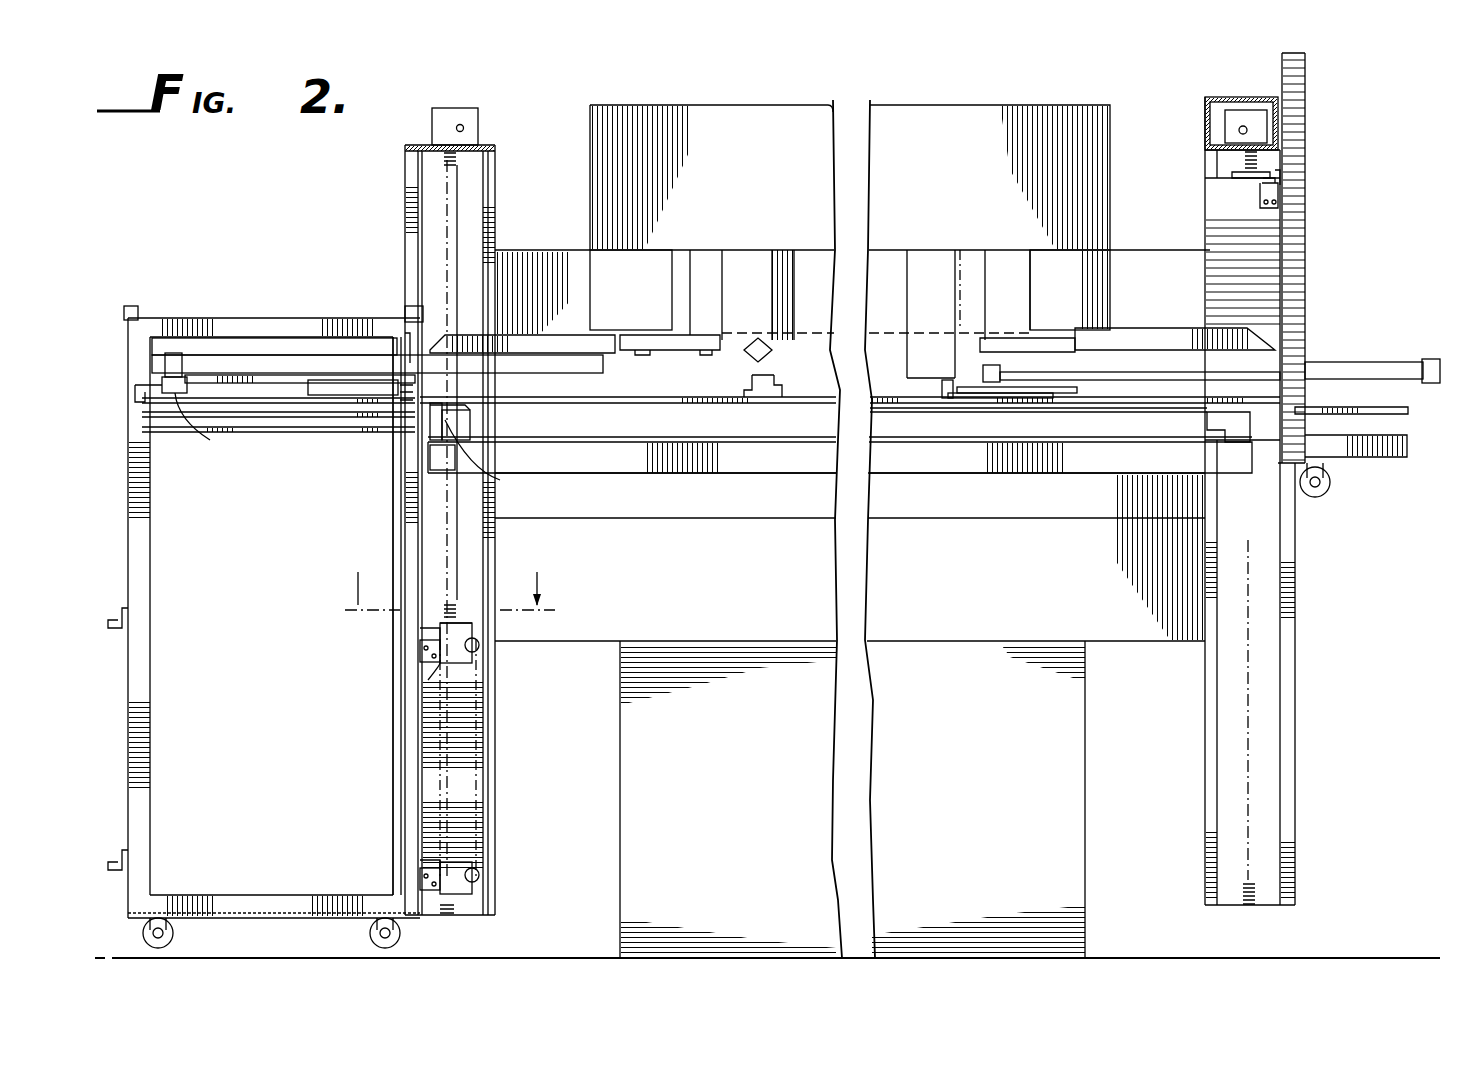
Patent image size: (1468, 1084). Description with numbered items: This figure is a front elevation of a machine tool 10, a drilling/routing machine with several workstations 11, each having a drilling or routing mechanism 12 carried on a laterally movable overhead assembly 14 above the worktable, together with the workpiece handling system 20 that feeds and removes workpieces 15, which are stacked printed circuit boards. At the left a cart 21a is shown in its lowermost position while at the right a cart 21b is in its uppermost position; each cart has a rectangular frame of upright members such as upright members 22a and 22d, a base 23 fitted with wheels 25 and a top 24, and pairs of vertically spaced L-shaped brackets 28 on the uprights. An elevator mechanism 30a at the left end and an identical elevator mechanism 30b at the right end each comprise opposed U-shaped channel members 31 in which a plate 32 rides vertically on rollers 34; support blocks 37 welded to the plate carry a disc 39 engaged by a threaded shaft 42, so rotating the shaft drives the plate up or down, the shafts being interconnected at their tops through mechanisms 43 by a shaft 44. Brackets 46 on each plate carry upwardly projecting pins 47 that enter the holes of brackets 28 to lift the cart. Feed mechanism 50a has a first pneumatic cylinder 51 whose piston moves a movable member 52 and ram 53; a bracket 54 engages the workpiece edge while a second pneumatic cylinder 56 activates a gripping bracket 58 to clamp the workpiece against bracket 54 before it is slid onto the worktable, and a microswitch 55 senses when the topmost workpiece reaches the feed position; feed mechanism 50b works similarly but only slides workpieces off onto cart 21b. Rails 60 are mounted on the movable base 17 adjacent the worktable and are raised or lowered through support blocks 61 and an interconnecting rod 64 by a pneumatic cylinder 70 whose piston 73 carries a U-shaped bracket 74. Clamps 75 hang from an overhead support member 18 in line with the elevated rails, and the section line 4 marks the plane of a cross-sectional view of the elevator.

The section line 4- 4 is at (446, 589).
The machine tool 10 is at (938, 100).
The workstations 11 is at (745, 238).
The drilling or routing mechanism 12 is at (898, 324).
The overhead assembly 14 is at (812, 118).
The workpiece 15 is at (330, 430).
The movable base 17 is at (928, 470).
The overhead support member 18 is at (700, 281).
The workpiece handling system 20 is at (232, 220).
The cart 21a is at (290, 585).
The cart 21b is at (1332, 108).
The upright member 22a is at (140, 530).
The upright member 22d is at (402, 508).
The base 23 is at (218, 895).
The top 24 is at (198, 318).
The wheels 25 is at (176, 935).
The L-shaped brackets 28 is at (122, 612).
The elevator mechanism 30a is at (402, 213).
The elevator mechanism 30b is at (1283, 236).
The U-shaped channel members 31 is at (405, 178).
The plate 32 is at (472, 737).
The rollers 34 is at (478, 650).
The support blocks 37 is at (430, 680).
The disc 39 is at (470, 623).
The threaded shaft 42 is at (480, 542).
The mechanisms 43 is at (470, 108).
The shaft 44 is at (455, 126).
The bracket 46 is at (430, 655).
The pin 47 is at (432, 625).
The feed mechanism 50a is at (246, 346).
The feed mechanism 50b is at (1282, 352).
The first pneumatic cylinder 51 is at (306, 360).
The movable member 52 is at (262, 375).
The ram 53 is at (215, 395).
The bracket 54 is at (138, 392).
The microswitch 55 is at (158, 435).
The second pneumatic cylinder 56 is at (328, 380).
The gripping bracket 58 is at (430, 388).
The rails 60 is at (660, 404).
The support blocks 61 is at (470, 428).
The rod 64 is at (575, 441).
The pneumatic cylinder 70 is at (410, 468).
The piston 73 is at (438, 435).
The U-shaped bracket 74 is at (452, 470).
The clamps 75 is at (765, 404).